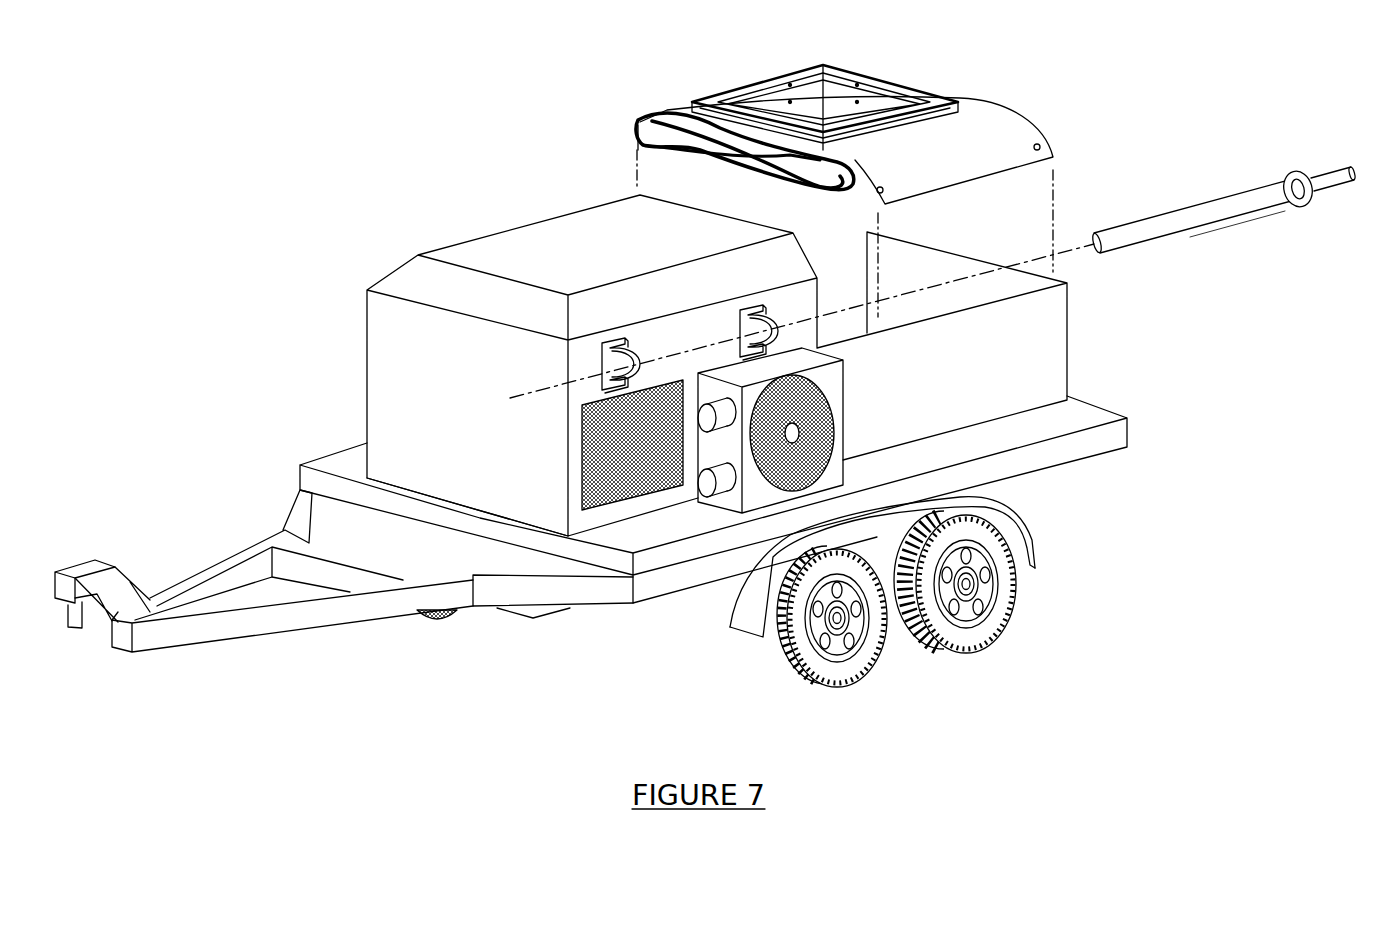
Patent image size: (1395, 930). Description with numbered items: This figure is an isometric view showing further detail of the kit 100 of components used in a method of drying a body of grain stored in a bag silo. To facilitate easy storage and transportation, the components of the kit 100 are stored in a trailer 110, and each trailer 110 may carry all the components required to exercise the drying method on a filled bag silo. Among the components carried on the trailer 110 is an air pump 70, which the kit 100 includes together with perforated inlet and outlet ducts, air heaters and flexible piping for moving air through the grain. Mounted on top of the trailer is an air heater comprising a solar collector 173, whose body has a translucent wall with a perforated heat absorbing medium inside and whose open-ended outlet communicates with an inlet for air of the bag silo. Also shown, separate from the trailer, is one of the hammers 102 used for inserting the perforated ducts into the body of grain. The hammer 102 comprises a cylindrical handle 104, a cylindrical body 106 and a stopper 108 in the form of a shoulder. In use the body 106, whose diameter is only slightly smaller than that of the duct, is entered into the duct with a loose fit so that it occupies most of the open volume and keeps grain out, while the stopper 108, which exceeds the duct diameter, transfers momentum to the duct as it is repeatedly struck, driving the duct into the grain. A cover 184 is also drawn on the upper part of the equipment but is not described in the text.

The kit 100 is at (235, 162).
The trailer 110 is at (458, 703).
The hammer 102 is at (1227, 257).
The cylindrical body 106 is at (1210, 210).
The stopper 108 is at (1297, 173).
The cylindrical handle 104 is at (1327, 177).
The air pump 70 is at (837, 437).
The solar collector 173 is at (867, 88).
The cover 184 is at (992, 128).